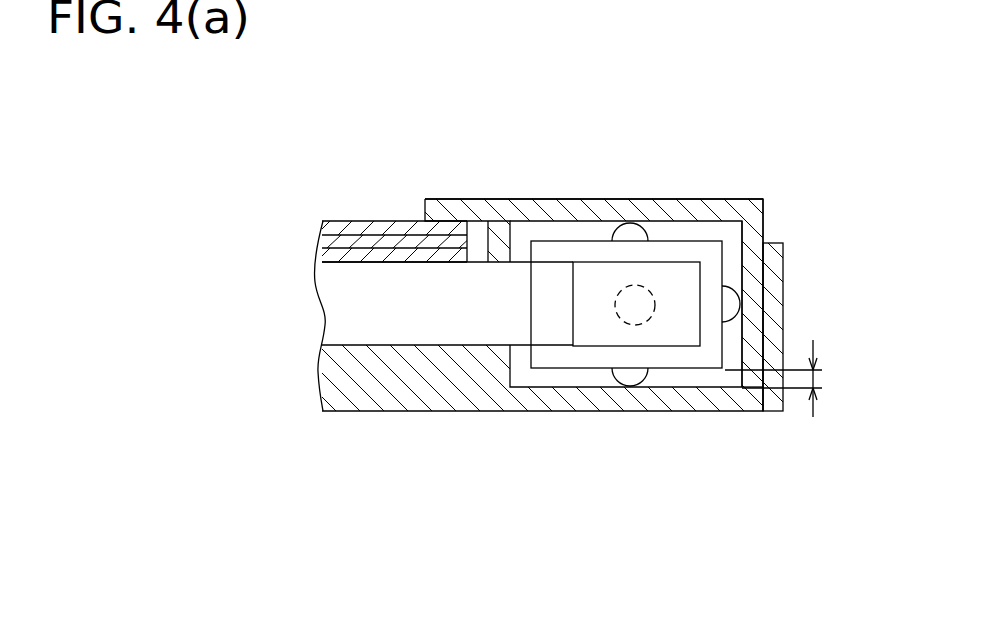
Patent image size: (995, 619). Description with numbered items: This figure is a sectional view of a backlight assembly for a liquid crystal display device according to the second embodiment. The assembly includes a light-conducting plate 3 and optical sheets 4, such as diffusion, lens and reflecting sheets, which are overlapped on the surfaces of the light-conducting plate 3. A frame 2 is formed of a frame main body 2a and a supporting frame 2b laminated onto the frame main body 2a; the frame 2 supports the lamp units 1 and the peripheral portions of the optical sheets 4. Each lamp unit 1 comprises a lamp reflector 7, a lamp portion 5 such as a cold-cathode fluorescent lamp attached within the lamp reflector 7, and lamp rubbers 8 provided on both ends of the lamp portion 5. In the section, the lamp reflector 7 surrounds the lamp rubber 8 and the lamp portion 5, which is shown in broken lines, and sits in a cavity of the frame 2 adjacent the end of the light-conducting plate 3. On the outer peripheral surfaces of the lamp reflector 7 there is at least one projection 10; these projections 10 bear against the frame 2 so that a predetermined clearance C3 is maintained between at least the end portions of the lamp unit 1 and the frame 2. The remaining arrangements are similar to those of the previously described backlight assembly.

The lamp unit 1 is at (689, 231).
The frame 2 is at (743, 101).
The frame main body 2a is at (777, 278).
The supporting frame 2b is at (720, 210).
The light-conducting plate 3 is at (358, 312).
The optical sheets 4 is at (363, 241).
The lamp portion 5 is at (628, 305).
The lamp reflector 7 is at (560, 251).
The lamp rubbers 8 is at (683, 330).
The projection 10 is at (632, 230).
The clearance C3 is at (813, 378).